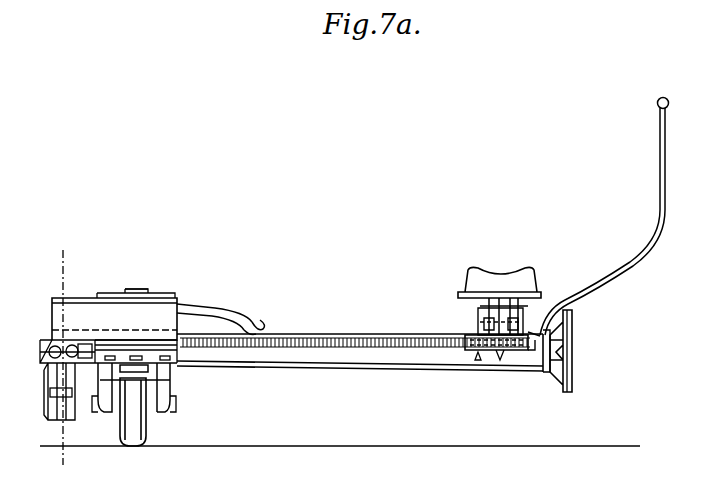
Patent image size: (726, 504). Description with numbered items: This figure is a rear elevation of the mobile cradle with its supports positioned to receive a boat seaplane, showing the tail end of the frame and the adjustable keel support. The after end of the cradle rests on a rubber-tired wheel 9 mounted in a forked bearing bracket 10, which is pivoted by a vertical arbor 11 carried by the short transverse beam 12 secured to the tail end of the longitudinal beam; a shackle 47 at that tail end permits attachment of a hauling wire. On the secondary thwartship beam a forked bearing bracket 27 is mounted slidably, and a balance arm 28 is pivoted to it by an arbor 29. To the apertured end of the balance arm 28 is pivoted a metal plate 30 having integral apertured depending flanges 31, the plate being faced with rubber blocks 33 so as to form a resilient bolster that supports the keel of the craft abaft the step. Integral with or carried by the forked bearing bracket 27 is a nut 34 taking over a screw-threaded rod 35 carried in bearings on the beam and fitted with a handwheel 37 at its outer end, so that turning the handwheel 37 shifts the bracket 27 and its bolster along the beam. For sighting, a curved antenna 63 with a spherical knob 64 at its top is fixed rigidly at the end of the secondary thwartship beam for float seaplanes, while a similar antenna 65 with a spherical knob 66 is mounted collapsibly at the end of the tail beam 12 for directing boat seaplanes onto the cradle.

The rubber-tired wheel 9 is at (135, 428).
The forked bearing bracket 10 is at (168, 388).
The vertical arbor 11 is at (146, 296).
The short transverse beam 12 is at (93, 325).
The forked bearing bracket 27 is at (478, 318).
The balance arm 28 is at (486, 314).
The arbor 29 is at (480, 327).
The metal plate 30 is at (537, 333).
The apertured depending flange 31 is at (548, 315).
The rubber block 33 is at (509, 278).
The nut 34 is at (499, 355).
The screw-threaded rod 35 is at (343, 348).
The handwheel 37 is at (574, 378).
The shackle 47 is at (73, 412).
The curved antenna 63 is at (604, 205).
The spherical knob 64 is at (657, 101).
The collapsible antenna 65 is at (253, 278).
The spherical knob 66 is at (265, 327).